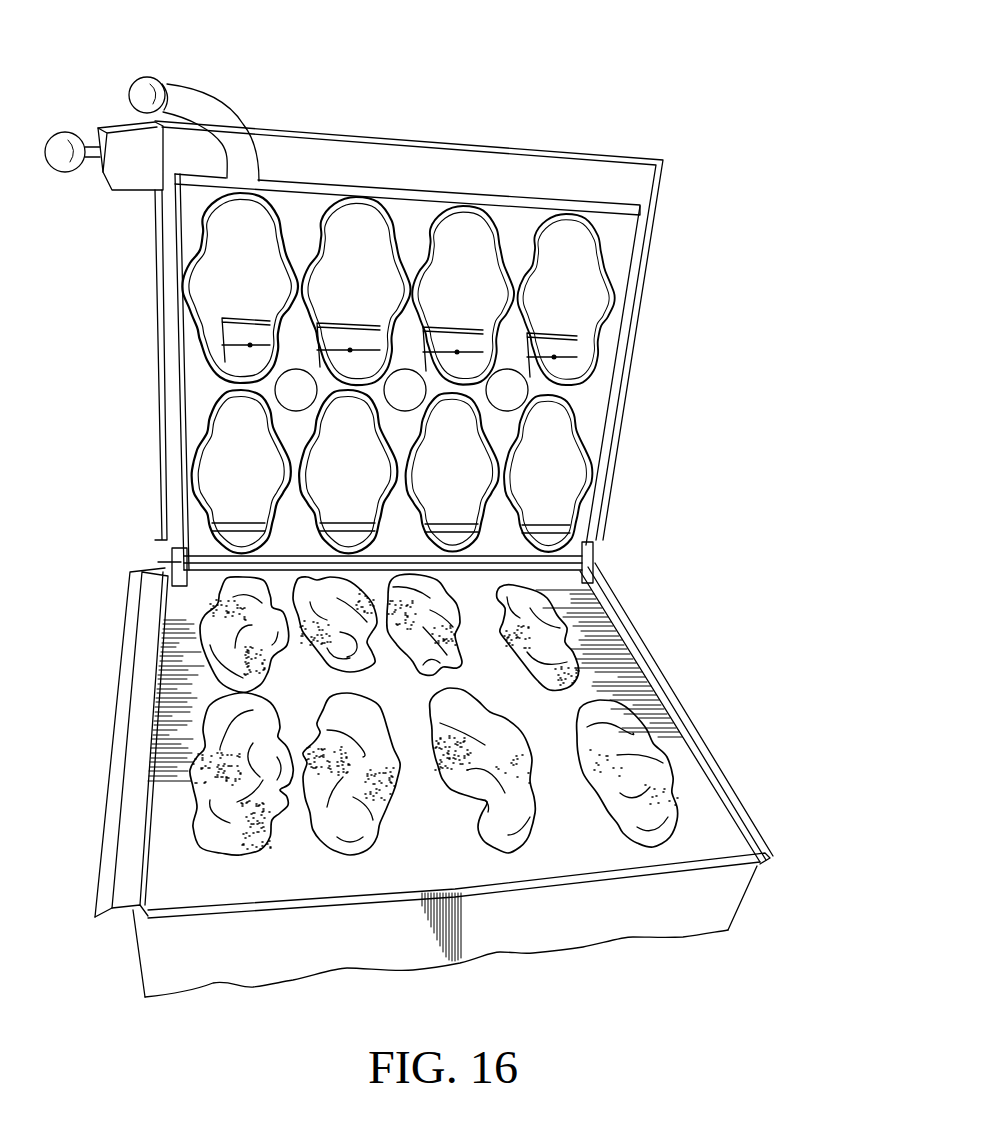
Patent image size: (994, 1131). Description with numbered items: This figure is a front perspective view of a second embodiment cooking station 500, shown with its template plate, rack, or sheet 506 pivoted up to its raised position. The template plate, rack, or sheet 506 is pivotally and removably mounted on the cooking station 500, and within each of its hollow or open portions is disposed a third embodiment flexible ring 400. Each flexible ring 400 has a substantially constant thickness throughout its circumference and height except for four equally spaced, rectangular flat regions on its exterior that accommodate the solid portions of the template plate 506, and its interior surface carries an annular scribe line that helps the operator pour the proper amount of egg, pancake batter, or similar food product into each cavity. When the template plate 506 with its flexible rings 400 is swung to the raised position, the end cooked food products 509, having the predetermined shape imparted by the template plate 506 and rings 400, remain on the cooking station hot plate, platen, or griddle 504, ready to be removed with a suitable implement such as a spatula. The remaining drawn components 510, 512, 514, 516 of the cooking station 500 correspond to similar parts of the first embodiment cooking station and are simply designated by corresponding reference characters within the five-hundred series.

The third embodiment flexible ring 400 is at (384, 216).
The second embodiment cooking station 500 is at (676, 303).
The cooking station hot plate, platen, or griddle 504 is at (707, 833).
The template plate, rack, or sheet 506 is at (294, 213).
The end cooked food products 509 is at (657, 746).
The handle 510 is at (190, 107).
The upper plate 512 is at (550, 177).
The mold cavities 514 is at (707, 208).
The cavity tabs 516 is at (240, 334).